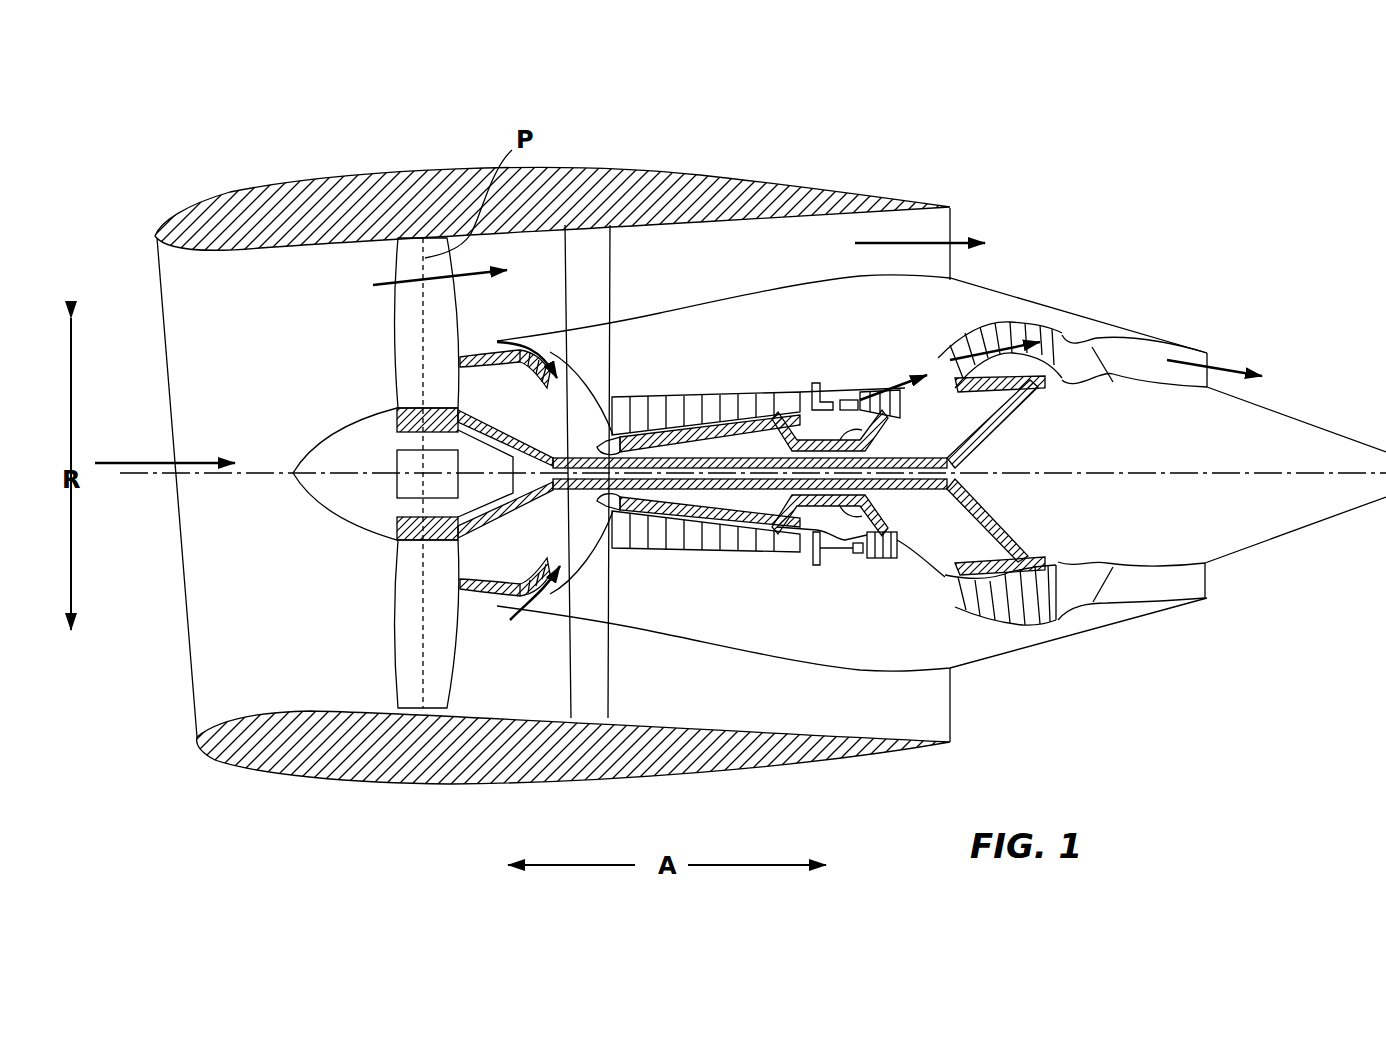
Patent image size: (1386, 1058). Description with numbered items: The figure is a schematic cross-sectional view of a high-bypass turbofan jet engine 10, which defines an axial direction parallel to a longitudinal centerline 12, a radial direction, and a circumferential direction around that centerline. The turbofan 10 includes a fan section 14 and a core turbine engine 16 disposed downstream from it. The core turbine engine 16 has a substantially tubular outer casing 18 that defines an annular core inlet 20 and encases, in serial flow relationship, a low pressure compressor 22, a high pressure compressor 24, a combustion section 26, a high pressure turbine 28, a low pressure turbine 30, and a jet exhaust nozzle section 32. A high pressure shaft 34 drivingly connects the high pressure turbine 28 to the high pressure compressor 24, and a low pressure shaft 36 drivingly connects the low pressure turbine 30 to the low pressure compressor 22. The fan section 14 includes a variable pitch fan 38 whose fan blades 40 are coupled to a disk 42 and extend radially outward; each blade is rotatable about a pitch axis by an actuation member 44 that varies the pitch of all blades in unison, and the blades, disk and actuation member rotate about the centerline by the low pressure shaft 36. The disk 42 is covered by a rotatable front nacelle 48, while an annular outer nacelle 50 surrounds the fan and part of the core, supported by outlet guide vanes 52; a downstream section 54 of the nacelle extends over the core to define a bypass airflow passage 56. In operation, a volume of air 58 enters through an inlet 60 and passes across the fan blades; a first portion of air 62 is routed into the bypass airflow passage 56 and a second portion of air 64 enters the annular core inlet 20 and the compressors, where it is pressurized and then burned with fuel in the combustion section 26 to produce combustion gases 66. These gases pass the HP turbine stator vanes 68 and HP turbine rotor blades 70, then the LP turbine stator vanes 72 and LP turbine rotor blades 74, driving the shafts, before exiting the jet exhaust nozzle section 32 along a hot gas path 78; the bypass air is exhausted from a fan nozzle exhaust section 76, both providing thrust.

The turbofan jet engine 10 is at (1113, 188).
The longitudinal centerline 12 is at (1173, 472).
The fan section 14 is at (347, 258).
The core turbine engine 16 is at (745, 347).
The outer casing 18 is at (783, 653).
The annular core inlet 20 is at (517, 593).
The low pressure compressor 22 is at (563, 567).
The high pressure compressor 24 is at (655, 542).
The combustion section 26 is at (837, 543).
The high pressure turbine 28 is at (905, 555).
The low pressure turbine 30 is at (1047, 622).
The jet exhaust nozzle section 32 is at (1207, 353).
The high pressure shaft 34 is at (885, 428).
The low pressure shaft 36 is at (527, 447).
The variable pitch fan 38 is at (367, 360).
The fan blades 40 is at (395, 643).
The disk 42 is at (413, 423).
The actuation member 44 is at (397, 460).
The rotatable front nacelle 48 is at (307, 495).
The outer nacelle 50 is at (447, 786).
The outlet guide vanes 52 is at (611, 257).
The downstream section of the nacelle 54 is at (893, 198).
The bypass airflow passage 56 is at (864, 244).
The volume of air 58 is at (157, 460).
The inlet 60 is at (192, 708).
The first portion of air 62 is at (407, 283).
The second portion of air 64 is at (490, 353).
The combustion gases 66 is at (887, 390).
The HP turbine stator vanes 68 is at (853, 547).
The HP turbine rotor blades 70 is at (873, 547).
The LP turbine stator vanes 72 is at (960, 578).
The LP turbine rotor blades 74 is at (970, 605).
The fan nozzle exhaust section 76 is at (943, 230).
The hot gas path 78 is at (937, 367).